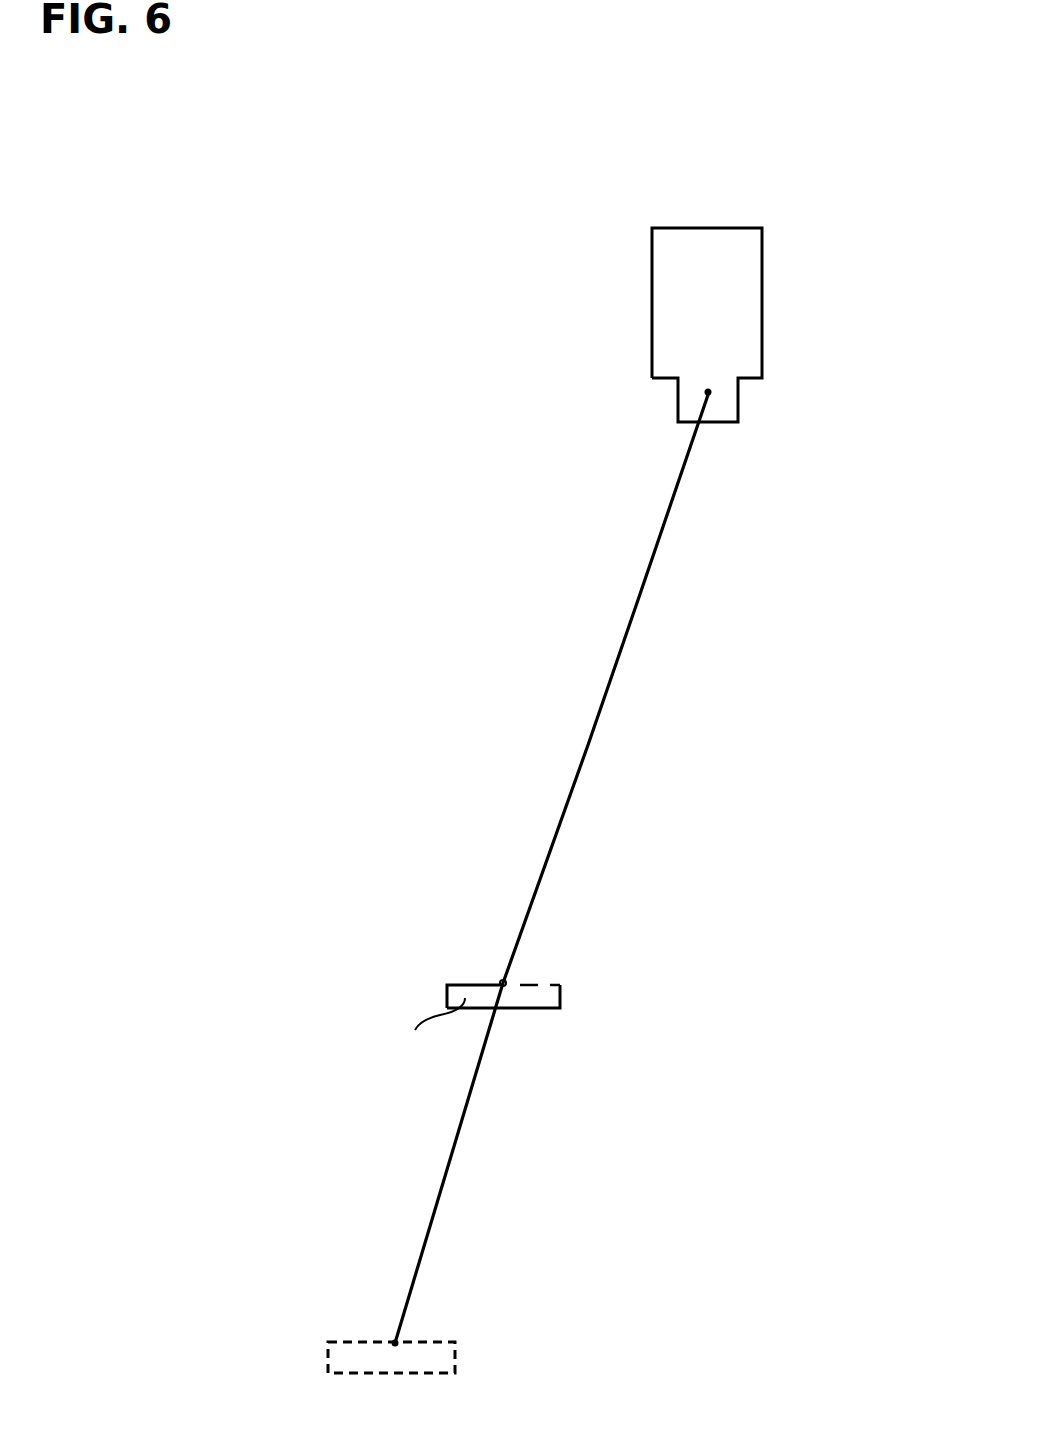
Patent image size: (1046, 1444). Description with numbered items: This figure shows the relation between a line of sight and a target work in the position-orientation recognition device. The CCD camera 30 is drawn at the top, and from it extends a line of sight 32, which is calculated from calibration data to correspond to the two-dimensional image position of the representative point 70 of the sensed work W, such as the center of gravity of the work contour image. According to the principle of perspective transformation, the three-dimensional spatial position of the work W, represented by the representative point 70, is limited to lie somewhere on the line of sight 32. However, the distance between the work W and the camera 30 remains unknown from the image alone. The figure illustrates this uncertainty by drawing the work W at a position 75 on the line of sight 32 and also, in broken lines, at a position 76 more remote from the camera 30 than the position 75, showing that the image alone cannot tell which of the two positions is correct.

The CCD camera 30 is at (778, 327).
The line of sight 32 is at (637, 642).
The representative point 70 is at (520, 976).
The position on the line of sight 75 is at (586, 993).
The position more remote from the camera 76 is at (478, 1352).
The work W is at (433, 1034).